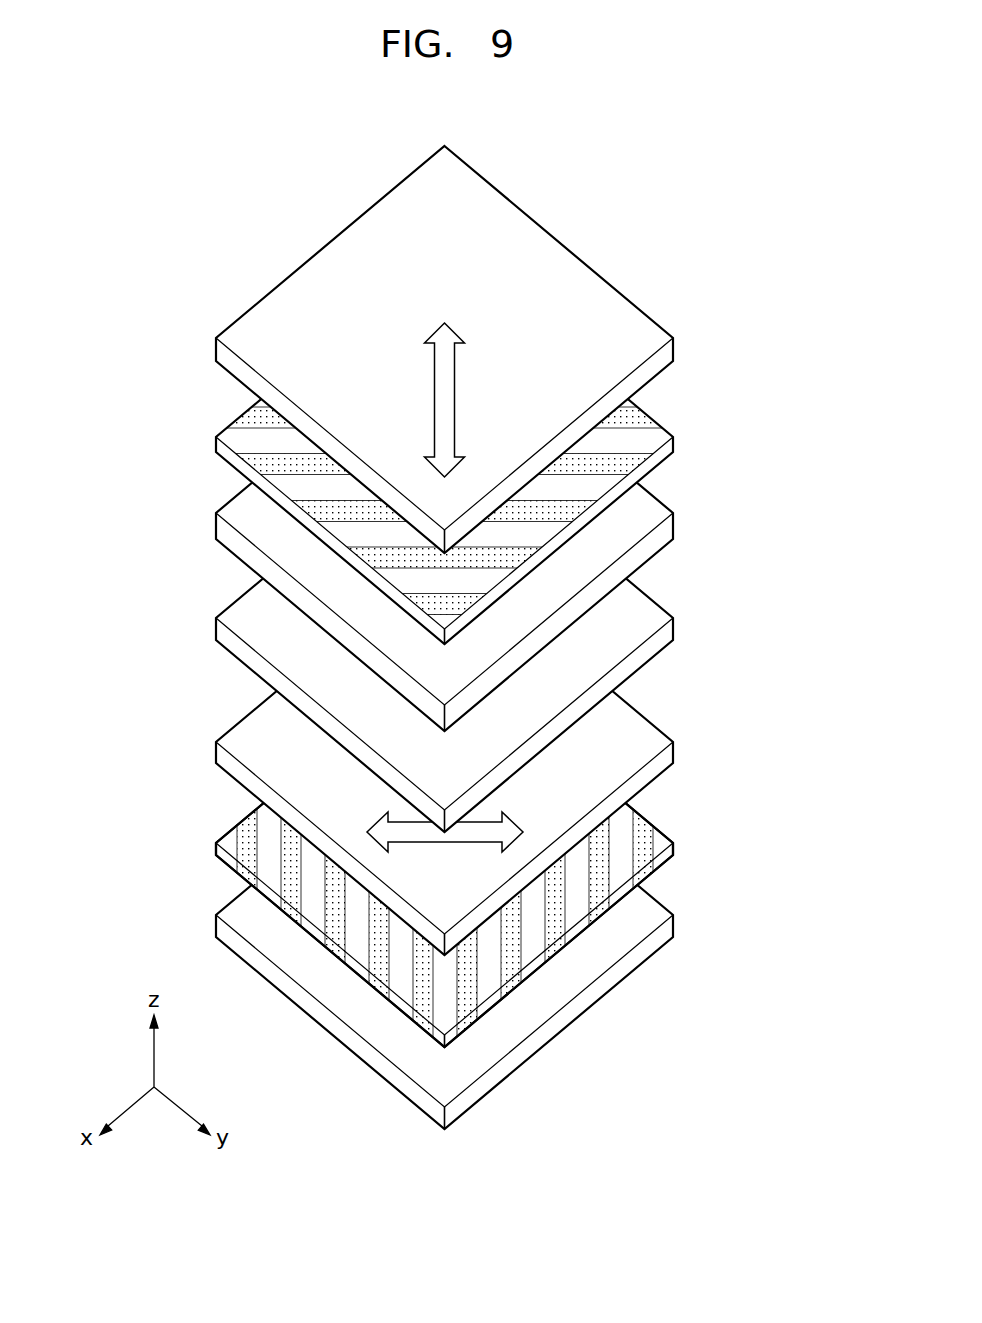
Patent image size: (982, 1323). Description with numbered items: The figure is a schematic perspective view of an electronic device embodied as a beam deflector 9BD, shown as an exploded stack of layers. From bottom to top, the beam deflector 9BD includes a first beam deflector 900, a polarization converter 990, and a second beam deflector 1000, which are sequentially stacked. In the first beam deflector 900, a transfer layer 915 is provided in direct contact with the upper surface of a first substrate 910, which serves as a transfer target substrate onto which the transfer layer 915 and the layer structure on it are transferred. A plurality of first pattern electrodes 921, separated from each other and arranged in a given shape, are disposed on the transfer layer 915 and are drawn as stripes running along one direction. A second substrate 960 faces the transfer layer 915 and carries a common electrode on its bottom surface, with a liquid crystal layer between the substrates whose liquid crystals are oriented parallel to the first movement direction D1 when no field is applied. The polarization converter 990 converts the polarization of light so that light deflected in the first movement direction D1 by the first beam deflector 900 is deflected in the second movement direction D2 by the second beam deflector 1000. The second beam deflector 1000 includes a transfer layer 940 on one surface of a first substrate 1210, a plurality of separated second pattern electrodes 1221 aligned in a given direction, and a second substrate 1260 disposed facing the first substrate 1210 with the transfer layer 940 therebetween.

The beam deflector 9BD is at (168, 218).
The second substrate 1260 is at (540, 253).
The second pattern electrodes 1221 is at (647, 437).
The first substrate 1210 is at (662, 534).
The second beam deflector 1000 is at (205, 340).
The polarization converter 990 is at (648, 613).
The second substrate 960 is at (648, 735).
The transfer layer 940 is at (325, 539).
The transfer layer 915 is at (444, 889).
The first pattern electrodes 921 is at (413, 990).
The first substrate 910 is at (558, 1028).
The first beam deflector 900 is at (205, 743).
The first movement direction D1 is at (442, 836).
The second movement direction D2 is at (446, 398).